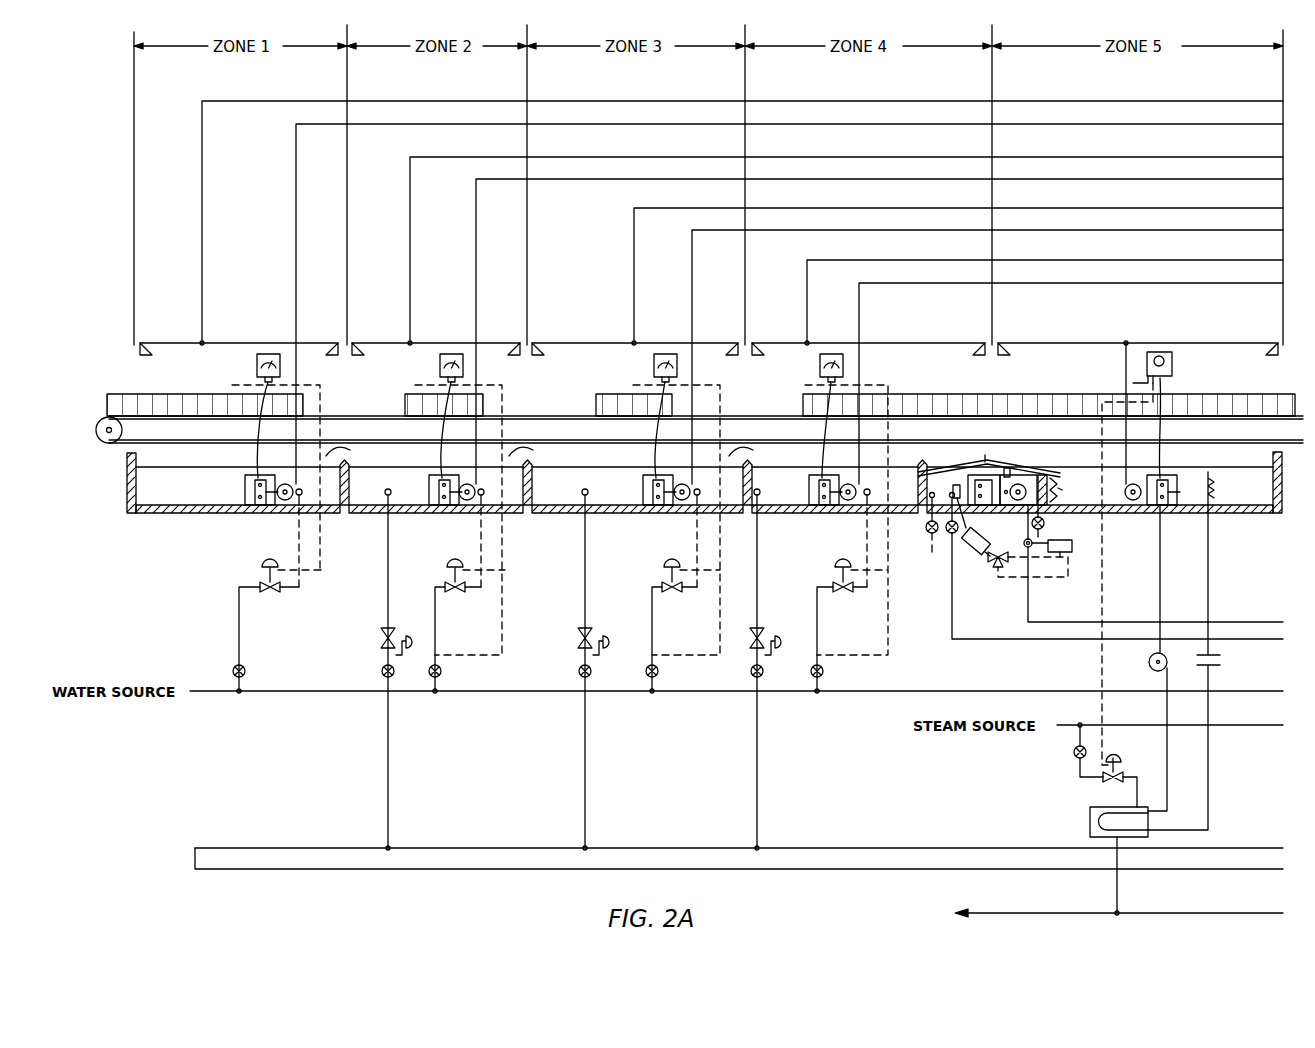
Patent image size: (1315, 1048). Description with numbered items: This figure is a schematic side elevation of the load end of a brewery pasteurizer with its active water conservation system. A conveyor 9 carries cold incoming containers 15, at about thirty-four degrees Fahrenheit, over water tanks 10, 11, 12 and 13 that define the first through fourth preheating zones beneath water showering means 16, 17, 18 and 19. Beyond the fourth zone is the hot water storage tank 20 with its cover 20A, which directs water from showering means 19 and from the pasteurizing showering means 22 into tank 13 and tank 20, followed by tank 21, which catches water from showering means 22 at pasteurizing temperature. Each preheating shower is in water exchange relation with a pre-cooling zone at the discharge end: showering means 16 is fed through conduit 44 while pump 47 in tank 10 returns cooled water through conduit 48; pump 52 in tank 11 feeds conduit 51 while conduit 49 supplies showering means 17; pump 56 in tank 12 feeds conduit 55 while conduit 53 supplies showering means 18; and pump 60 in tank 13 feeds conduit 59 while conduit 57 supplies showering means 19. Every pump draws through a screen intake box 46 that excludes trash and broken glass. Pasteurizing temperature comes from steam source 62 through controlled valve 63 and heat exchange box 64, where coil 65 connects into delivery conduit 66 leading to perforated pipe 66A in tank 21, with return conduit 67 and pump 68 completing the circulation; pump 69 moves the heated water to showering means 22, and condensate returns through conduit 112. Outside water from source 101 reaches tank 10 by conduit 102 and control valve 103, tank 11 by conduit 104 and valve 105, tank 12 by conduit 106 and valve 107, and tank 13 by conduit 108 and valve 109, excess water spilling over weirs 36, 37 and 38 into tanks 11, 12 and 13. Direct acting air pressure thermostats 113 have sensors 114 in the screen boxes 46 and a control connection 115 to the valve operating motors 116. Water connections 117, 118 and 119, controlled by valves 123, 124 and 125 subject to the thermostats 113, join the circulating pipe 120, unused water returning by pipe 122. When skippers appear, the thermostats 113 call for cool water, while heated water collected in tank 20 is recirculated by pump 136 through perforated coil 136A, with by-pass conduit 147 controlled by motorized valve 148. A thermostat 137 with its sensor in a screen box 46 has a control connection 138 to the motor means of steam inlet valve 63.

The conveyor 9 is at (104, 441).
The water tank 10 is at (168, 498).
The water tank 11 is at (370, 498).
The water tank 12 is at (548, 495).
The water tank 13 is at (785, 495).
The containers 15 is at (118, 388).
The water showering means 16 is at (232, 343).
The showering means 17 is at (432, 343).
The showering means 18 is at (578, 343).
The showering means 19 is at (878, 343).
The hot water storage tank 20 is at (945, 478).
The cover 20A is at (1010, 468).
The tank 21 is at (1245, 495).
The showering means 22 is at (1057, 343).
The weir 36 is at (350, 462).
The weir 37 is at (533, 462).
The weir 38 is at (752, 468).
The conduit 44 is at (203, 186).
The screen intake box 46 is at (245, 490).
The pump 47 is at (283, 500).
The conduit 48 is at (296, 232).
The conduit 49 is at (410, 198).
The control line 51 is at (476, 252).
The pump 52 is at (476, 488).
The conduit 53 is at (634, 228).
The conduit 55 is at (692, 262).
The pump 56 is at (685, 485).
The conduit 57 is at (807, 268).
The conduit 59 is at (900, 283).
The pump 60 is at (852, 485).
The steam source 62 is at (1060, 732).
The controlled valve 63 is at (1103, 782).
The heat exchange box 64 is at (1090, 822).
The coil 65 is at (1135, 840).
The delivery conduit 66 is at (1210, 775).
The perforated pipe 66A is at (1213, 478).
The return conduit 67 is at (1167, 790).
The pump 68 is at (1150, 665).
The pump 69 is at (1135, 500).
The source of outside water 101 is at (230, 693).
The conduit 102 is at (239, 636).
The control valve 103 is at (275, 592).
The conduit 104 is at (437, 640).
The valve 105 is at (450, 585).
The conduit 106 is at (654, 640).
The valve 107 is at (665, 585).
The conduit 108 is at (819, 640).
The valve 109 is at (835, 585).
The conduit 112 is at (1205, 915).
The direct acting air pressure thermostat 113 is at (257, 365).
The sensor 114 is at (258, 478).
The control connection 115 is at (323, 570).
The valve actuator 116 is at (263, 555).
The water connection 117 is at (388, 780).
The water connection 118 is at (585, 780).
The water connection 119 is at (757, 780).
The water circulating system 120 is at (488, 870).
The pipe 122 is at (830, 848).
The valve 123 is at (385, 645).
The valve 124 is at (582, 645).
The valve 125 is at (755, 645).
The pump 136 is at (1010, 477).
The perforated coil 136A is at (1082, 490).
The thermostat 137 is at (1155, 352).
The control connection 138 is at (1104, 598).
The by-pass conduit 147 is at (1044, 522).
The motorized valve 148 is at (1030, 548).